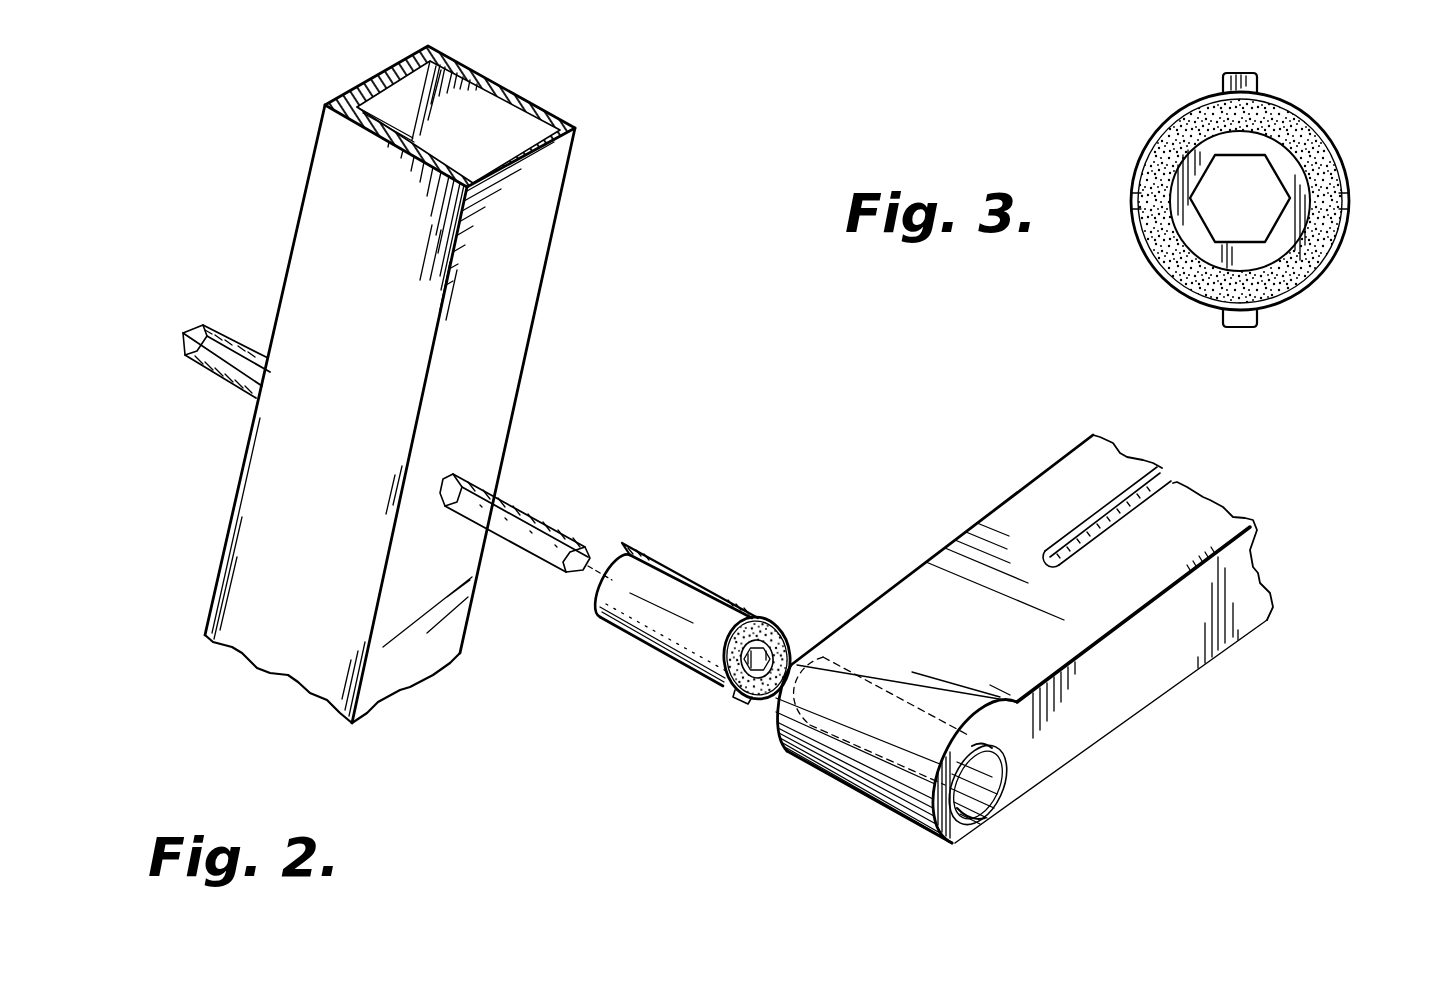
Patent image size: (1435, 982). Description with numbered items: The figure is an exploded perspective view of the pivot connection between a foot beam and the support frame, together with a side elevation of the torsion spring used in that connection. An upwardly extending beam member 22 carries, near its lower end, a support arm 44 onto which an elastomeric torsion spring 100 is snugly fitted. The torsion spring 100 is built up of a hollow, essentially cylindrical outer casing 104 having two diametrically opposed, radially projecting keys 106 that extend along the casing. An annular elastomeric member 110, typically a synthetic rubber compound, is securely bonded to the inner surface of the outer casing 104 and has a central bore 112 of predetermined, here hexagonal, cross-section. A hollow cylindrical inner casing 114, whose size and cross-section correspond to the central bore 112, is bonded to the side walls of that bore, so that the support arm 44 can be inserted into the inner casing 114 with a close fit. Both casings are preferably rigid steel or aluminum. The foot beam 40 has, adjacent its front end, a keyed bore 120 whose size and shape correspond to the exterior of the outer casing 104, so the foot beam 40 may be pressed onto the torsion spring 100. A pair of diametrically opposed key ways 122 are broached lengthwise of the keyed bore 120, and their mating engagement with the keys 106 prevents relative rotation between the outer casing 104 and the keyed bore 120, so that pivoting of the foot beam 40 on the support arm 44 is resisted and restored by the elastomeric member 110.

In FIG. 2, the upwardly extending beam member 22 is at (523, 297).
In FIG. 2, the support arm 44 is at (535, 518).
In FIG. 2, the elastomeric torsion spring 100 is at (773, 622).
In FIG. 3, the elastomeric torsion spring 100 is at (1152, 130).
In FIG. 2, the foot beam 40 is at (1258, 613).
In FIG. 2, the keyed bore 120 is at (1000, 800).
In FIG. 2, the key way 122 is at (980, 748).
In FIG. 3, the outer casing 104 is at (1327, 128).
In FIG. 3, the key 106 is at (1240, 73).
In FIG. 3, the annular elastomeric member 110 is at (1175, 255).
In FIG. 3, the central bore 112 is at (1276, 220).
In FIG. 3, the inner casing 114 is at (1203, 180).